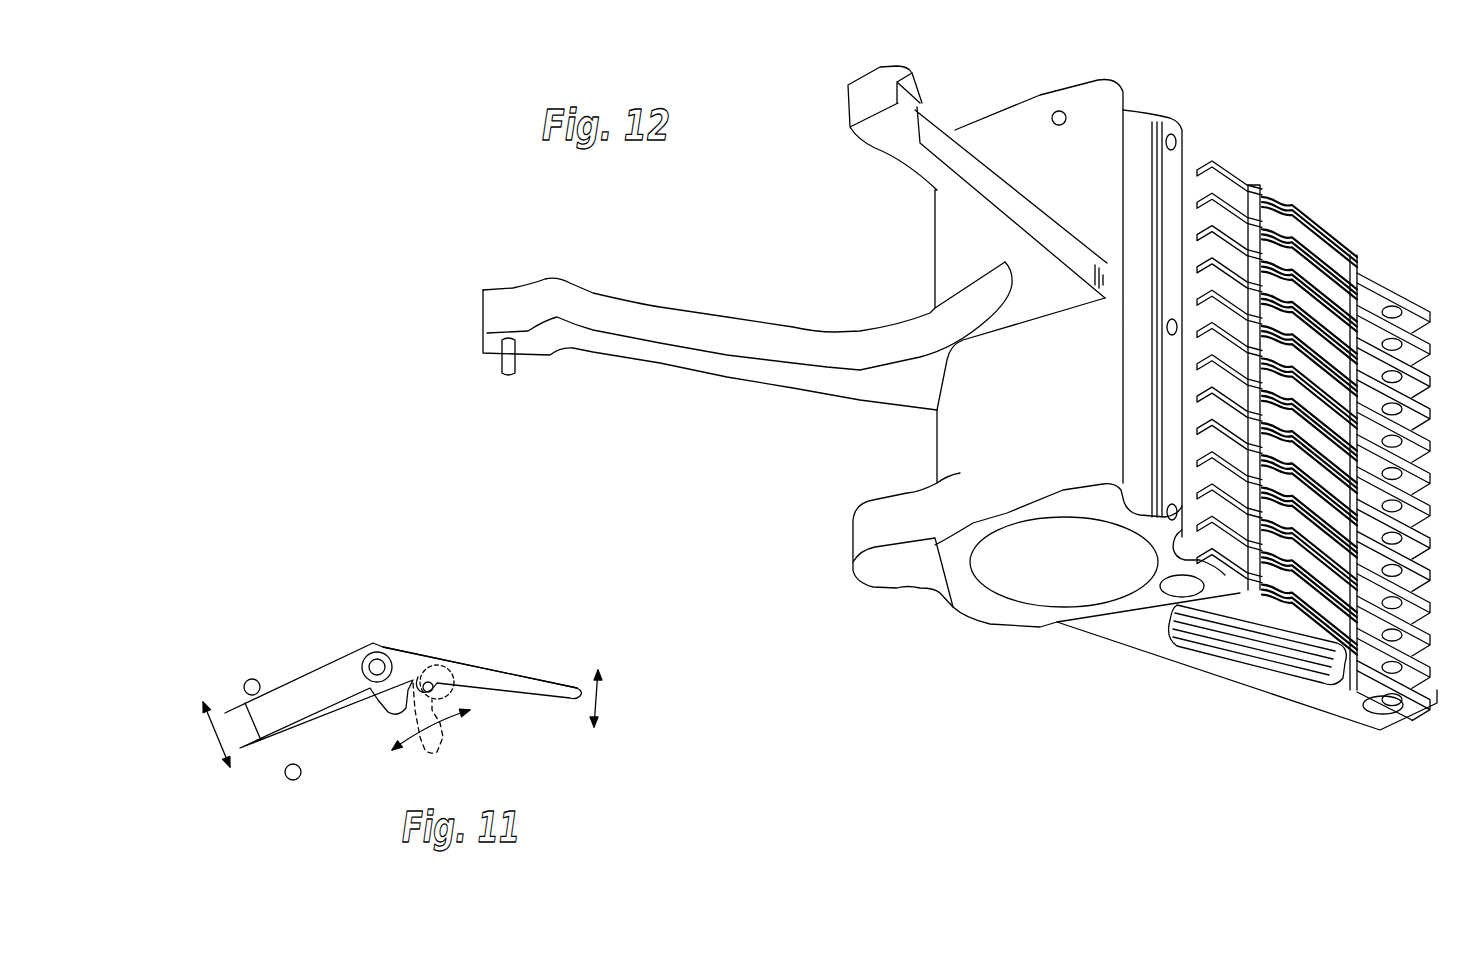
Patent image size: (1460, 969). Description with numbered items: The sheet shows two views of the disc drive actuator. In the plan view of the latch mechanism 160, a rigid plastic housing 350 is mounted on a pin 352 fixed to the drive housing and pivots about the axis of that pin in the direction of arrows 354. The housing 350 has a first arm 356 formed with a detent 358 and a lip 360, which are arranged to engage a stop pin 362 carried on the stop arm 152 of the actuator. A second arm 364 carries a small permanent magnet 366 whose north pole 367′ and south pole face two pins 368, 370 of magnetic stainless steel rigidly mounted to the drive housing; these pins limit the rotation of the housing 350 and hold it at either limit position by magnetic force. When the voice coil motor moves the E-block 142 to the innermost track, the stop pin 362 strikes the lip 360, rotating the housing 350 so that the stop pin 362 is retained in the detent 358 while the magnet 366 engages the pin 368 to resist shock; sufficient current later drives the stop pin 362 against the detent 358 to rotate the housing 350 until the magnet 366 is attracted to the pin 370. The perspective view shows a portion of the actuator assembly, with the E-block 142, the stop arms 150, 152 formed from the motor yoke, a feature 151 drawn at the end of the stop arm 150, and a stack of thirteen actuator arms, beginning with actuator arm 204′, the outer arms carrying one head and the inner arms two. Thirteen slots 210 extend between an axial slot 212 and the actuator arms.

In FIG. 12, the E-block 142 is at (1107, 77).
In FIG. 12, the stop arm 150 is at (865, 72).
In FIG. 12, the notch 151 is at (925, 117).
In FIG. 12, the stop arm 152 is at (508, 290).
In FIG. 11, the stop arm 152 is at (443, 727).
In FIG. 11, the latch mechanism 160 is at (360, 643).
In FIG. 12, the slots 210 is at (1220, 563).
In FIG. 12, the axial slot 212 is at (1180, 163).
In FIG. 12, the actuator arm 204′ is at (1320, 227).
In FIG. 11, the housing 350 is at (487, 667).
In FIG. 11, the pin 352 is at (383, 657).
In FIG. 11, the arrows 354 is at (210, 738).
In FIG. 11, the first arm 356 is at (547, 683).
In FIG. 11, the detent 358 is at (418, 680).
In FIG. 11, the lip 360 is at (373, 723).
In FIG. 12, the stop pin 362 is at (520, 367).
In FIG. 11, the stop pin 362 is at (435, 707).
In FIG. 11, the second arm 364 is at (300, 673).
In FIG. 11, the permanent magnet 366 is at (270, 740).
In FIG. 11, the north pole 367′ is at (242, 698).
In FIG. 11, the pin 368 is at (252, 680).
In FIG. 11, the pin 370 is at (303, 772).